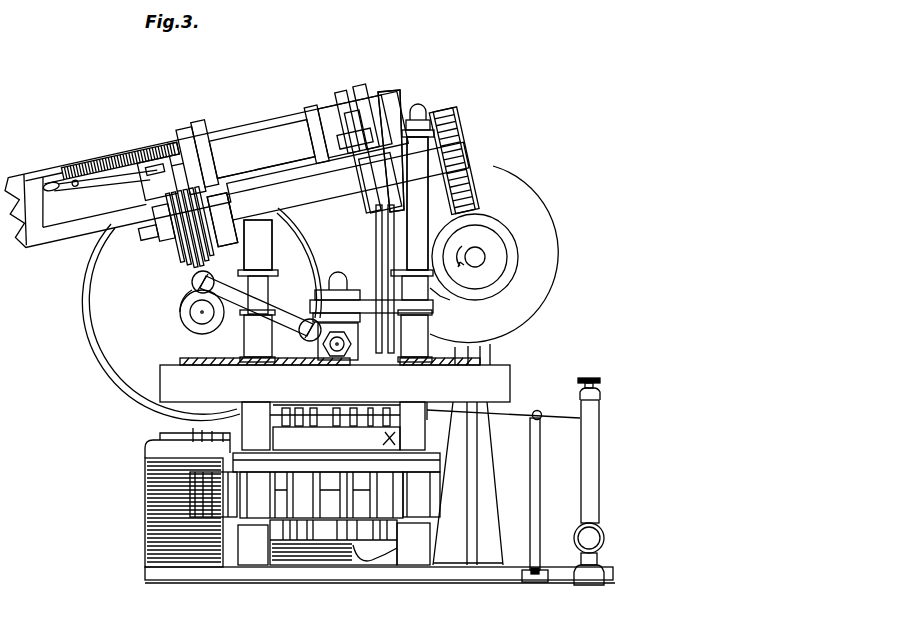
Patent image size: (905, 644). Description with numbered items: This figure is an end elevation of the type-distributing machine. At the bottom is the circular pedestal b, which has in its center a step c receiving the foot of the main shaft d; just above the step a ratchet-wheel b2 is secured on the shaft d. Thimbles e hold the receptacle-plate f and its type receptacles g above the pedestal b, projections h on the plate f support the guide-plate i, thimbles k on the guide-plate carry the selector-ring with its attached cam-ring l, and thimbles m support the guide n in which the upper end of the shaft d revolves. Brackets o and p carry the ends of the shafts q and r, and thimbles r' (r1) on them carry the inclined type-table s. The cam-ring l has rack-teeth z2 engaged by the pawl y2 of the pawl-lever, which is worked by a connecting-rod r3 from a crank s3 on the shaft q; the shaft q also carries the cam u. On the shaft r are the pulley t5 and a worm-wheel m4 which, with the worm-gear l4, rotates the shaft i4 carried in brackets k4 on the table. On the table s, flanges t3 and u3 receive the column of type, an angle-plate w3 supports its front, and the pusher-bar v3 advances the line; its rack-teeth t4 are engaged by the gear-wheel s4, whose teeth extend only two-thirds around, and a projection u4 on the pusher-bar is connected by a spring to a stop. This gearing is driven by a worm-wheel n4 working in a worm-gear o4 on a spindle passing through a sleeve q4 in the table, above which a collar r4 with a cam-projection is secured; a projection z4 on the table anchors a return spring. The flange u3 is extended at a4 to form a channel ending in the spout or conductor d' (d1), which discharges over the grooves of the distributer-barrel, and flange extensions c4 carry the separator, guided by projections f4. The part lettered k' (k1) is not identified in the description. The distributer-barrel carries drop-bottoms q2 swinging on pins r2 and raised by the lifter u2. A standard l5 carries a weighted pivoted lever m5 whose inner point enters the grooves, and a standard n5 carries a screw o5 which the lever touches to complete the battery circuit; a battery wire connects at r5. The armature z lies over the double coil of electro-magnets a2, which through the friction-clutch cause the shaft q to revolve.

The type-table s is at (207, 169).
The rack-teeth t4 is at (95, 164).
The gear-wheel s4 is at (158, 143).
The collar r4 is at (157, 178).
The flange extension a4 is at (54, 187).
The pusher-bar projection u4 is at (75, 189).
The flange t3 is at (186, 128).
The pusher-bar v3 is at (202, 124).
The angle-plate w3 is at (266, 161).
The table projection z4 is at (178, 168).
The flange u3 is at (311, 104).
The flange extensions c4 is at (360, 91).
The separator projections f4 is at (354, 162).
The spout or conductor d' is at (396, 215).
The spout or conductor d1 is at (403, 145).
The brackets k4 is at (380, 182).
The block k' is at (222, 220).
The block k1 is at (222, 220).
The shaft i4 is at (348, 181).
The worm-gear l4 is at (454, 158).
The worm-wheel n4 is at (176, 258).
The sleeve q4 is at (158, 236).
The worm-gear o4 is at (140, 239).
The thimbles r' is at (336, 209).
The thimbles r1 is at (336, 203).
The thimbles m is at (336, 336).
The guide n is at (346, 300).
The shaft d is at (337, 276).
The pins r2 is at (345, 340).
The pawl y2 is at (320, 338).
The bracket o is at (264, 294).
The shaft q is at (200, 312).
The crank s3 is at (190, 302).
The connecting-rod r3 is at (250, 305).
The cam u is at (86, 352).
The pulley t5 is at (494, 265).
The worm-wheel m4 is at (512, 236).
The shaft r is at (485, 257).
The bracket p is at (443, 303).
The cam-ring l is at (335, 383).
The rack-teeth z2 is at (283, 366).
The thimbles k is at (333, 426).
The guide-plate i is at (335, 427).
The drop-bottoms q2 is at (336, 439).
The lifter u2 is at (378, 441).
The armature z is at (187, 446).
The projections h is at (436, 468).
The electro-magnets a2 is at (184, 512).
The receptacles g is at (315, 494).
The receptacle-plate f is at (321, 495).
The thimbles e is at (334, 544).
The step c is at (333, 543).
The ratchet-wheel b2 is at (375, 555).
The pedestal b is at (440, 582).
The pivoted lever m5 is at (556, 420).
The standard l5 is at (540, 490).
The standard n5 is at (599, 492).
The screw o5 is at (601, 381).
The battery connection r5 is at (605, 538).